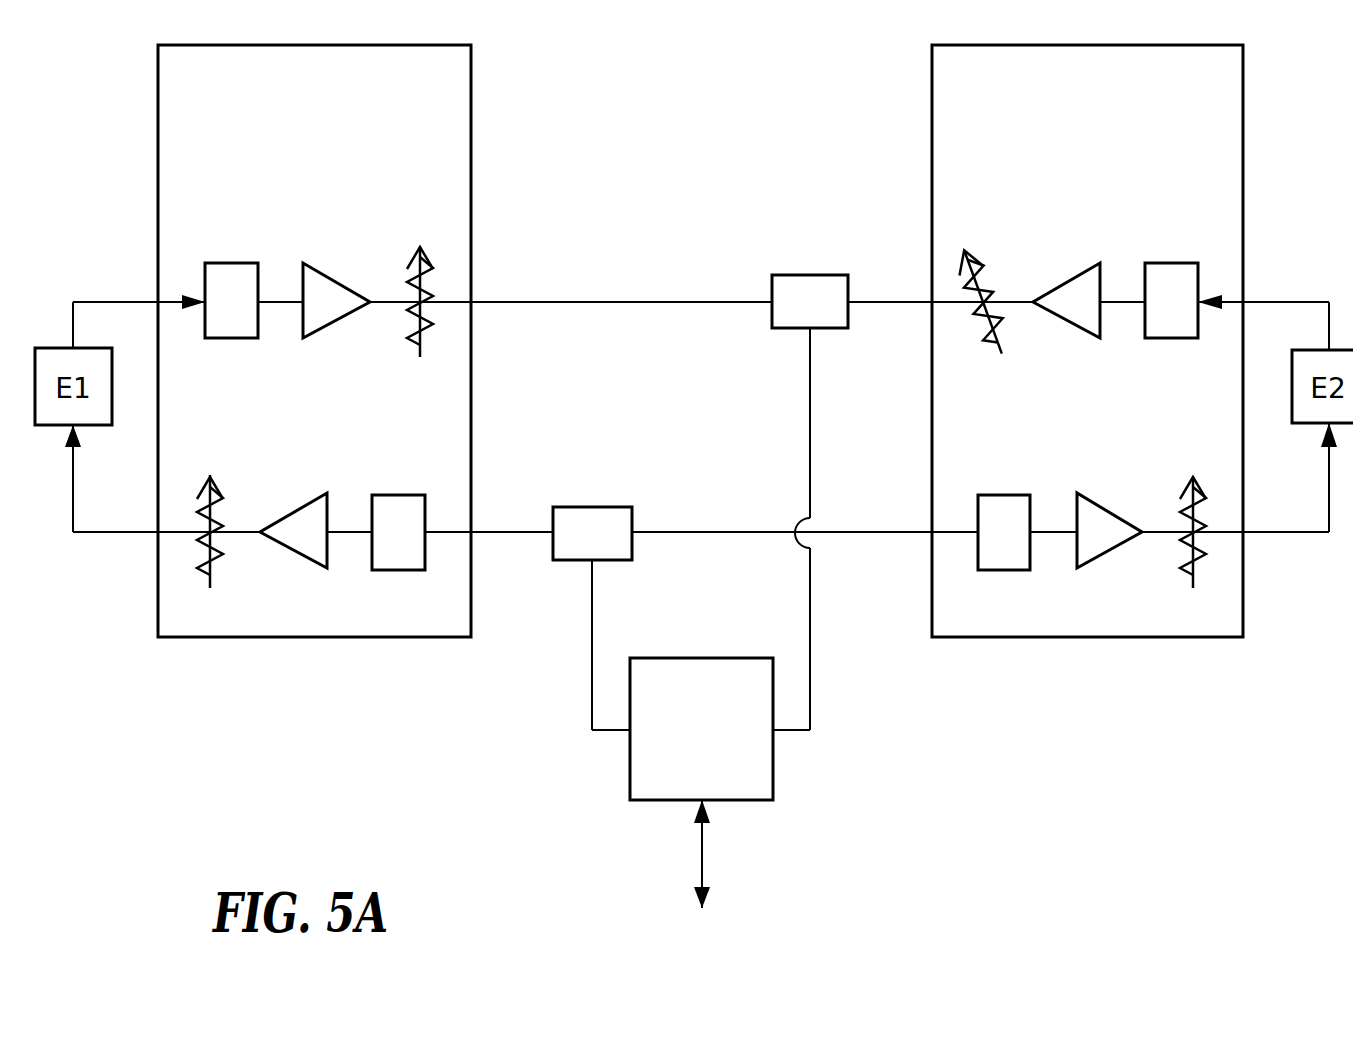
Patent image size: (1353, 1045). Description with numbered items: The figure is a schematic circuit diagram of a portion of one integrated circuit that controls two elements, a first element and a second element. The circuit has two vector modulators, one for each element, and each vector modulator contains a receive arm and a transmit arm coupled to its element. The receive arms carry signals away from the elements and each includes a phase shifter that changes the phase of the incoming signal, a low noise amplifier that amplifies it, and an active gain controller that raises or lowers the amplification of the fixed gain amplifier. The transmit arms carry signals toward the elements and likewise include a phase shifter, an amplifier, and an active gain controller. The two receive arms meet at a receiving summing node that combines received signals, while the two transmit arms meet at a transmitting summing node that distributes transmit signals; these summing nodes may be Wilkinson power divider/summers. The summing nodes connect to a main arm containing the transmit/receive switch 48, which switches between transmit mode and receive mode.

The switch 48 is at (686, 781).